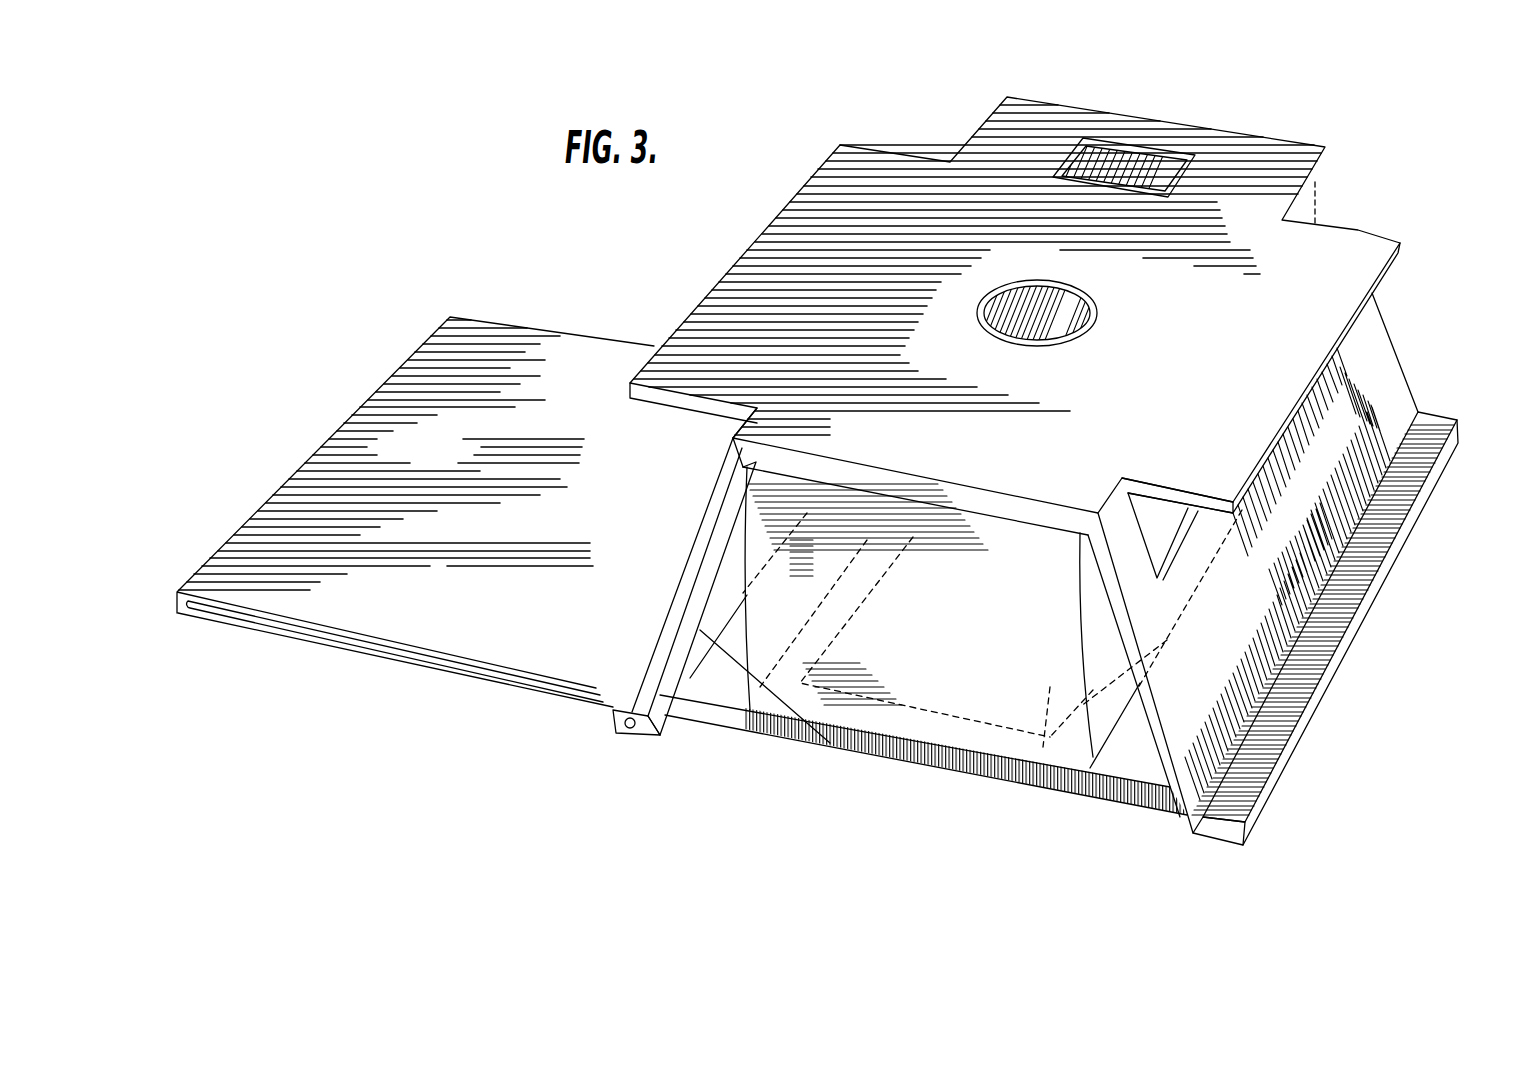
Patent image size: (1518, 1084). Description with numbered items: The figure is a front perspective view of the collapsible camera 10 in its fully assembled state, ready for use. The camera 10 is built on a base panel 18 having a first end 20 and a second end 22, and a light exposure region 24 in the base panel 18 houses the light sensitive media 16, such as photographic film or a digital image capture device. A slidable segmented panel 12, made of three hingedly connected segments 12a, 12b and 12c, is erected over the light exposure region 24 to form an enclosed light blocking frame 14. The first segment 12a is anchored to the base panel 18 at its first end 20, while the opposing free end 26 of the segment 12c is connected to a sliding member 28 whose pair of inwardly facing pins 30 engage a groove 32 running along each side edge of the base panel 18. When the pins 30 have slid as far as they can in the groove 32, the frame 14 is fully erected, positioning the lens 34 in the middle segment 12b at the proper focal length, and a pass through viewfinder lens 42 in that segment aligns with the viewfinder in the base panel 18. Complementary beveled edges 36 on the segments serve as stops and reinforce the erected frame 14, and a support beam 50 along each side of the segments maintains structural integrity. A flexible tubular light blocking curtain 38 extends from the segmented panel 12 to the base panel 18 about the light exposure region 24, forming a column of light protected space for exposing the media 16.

The camera 10 is at (1285, 100).
The segmented panel 12 is at (1340, 195).
The first segment 12a is at (1177, 760).
The middle segment 12b is at (765, 410).
The third segment 12c is at (675, 655).
The light blocking frame 14 is at (1048, 96).
The light sensitive media 16 is at (1043, 747).
The base panel 18 is at (743, 720).
The first end 20 is at (1218, 833).
The second end 22 is at (177, 600).
The light exposure region 24 is at (907, 750).
The free end 26 is at (658, 710).
The sliding member 28 is at (647, 735).
The pins 30 is at (625, 728).
The groove 32 is at (443, 653).
The lens 34 is at (988, 297).
The beveled edges 36 is at (733, 452).
The light blocking curtain 38 is at (997, 703).
The pass through viewfinder lens 42 is at (1128, 163).
The support beam 50 is at (827, 747).